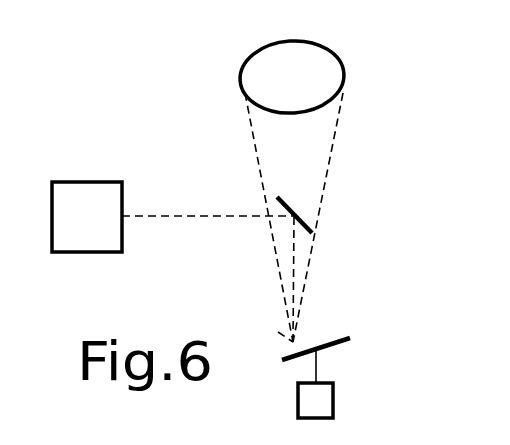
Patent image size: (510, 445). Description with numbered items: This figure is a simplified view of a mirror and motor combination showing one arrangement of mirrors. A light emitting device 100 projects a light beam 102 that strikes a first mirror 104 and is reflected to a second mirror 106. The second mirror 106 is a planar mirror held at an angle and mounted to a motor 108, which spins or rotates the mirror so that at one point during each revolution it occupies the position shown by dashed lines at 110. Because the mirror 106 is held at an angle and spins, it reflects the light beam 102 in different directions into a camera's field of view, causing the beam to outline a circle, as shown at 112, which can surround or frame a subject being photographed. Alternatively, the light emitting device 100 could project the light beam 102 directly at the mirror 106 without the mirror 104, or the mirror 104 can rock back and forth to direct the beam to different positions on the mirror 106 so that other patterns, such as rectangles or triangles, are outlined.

The light emitting device 100 is at (98, 182).
The light beam 102 is at (228, 218).
The first mirror 104 is at (302, 217).
The second mirror 106 is at (330, 338).
The motor 108 is at (333, 407).
The position of mirror shown by dashed lines 110 is at (327, 352).
The circle 112 is at (318, 45).